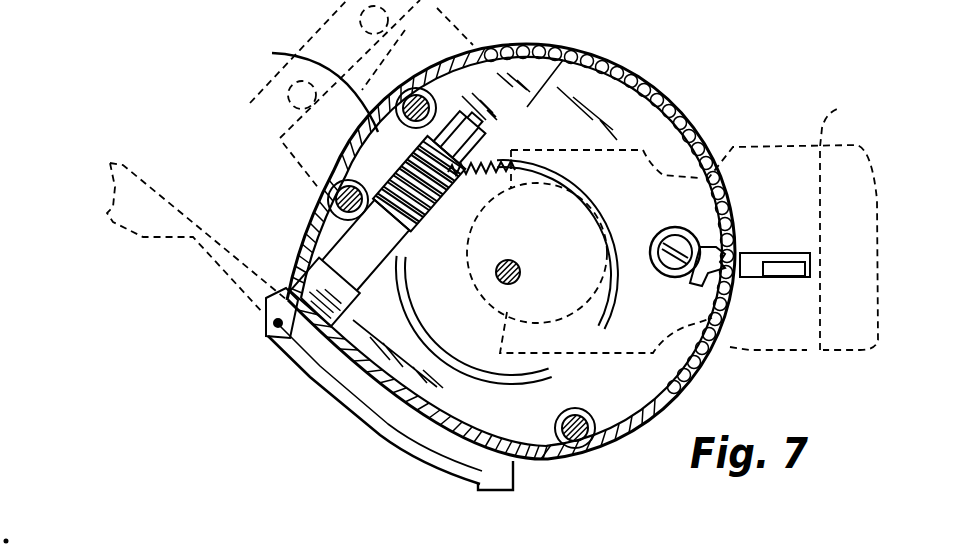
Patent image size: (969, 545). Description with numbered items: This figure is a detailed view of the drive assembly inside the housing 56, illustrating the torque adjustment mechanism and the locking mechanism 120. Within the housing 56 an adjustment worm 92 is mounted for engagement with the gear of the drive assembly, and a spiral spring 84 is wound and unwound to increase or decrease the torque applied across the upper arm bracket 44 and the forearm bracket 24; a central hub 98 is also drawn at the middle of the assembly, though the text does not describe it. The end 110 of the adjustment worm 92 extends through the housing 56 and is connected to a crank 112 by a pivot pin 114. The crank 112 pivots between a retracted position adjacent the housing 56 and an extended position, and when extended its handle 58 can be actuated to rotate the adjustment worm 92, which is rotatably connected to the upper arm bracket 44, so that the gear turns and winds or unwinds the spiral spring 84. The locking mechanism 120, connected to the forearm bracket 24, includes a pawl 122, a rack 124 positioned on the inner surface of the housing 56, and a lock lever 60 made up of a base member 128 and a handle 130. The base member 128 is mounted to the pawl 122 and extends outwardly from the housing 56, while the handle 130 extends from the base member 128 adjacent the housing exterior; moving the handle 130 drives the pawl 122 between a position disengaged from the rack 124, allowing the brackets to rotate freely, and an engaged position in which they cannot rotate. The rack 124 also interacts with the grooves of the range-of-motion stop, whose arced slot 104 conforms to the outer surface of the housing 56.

The forearm bracket 24 is at (672, 223).
The upper arm bracket 44 is at (310, 5).
The housing 56 is at (538, 42).
The handle 58 is at (478, 492).
The lock lever 60 is at (773, 277).
The spiral spring 84 is at (600, 266).
The adjustment worm 92 is at (396, 137).
The shaft 98 is at (509, 260).
The slot 104 is at (333, 191).
The end 110 is at (304, 84).
The crank 112 is at (312, 372).
The pivot pin 114 is at (273, 341).
The locking mechanism 120 is at (753, 253).
The pawl 122 is at (700, 282).
The rack 124 is at (627, 68).
The base member 128 is at (667, 228).
The handle 130 is at (786, 253).